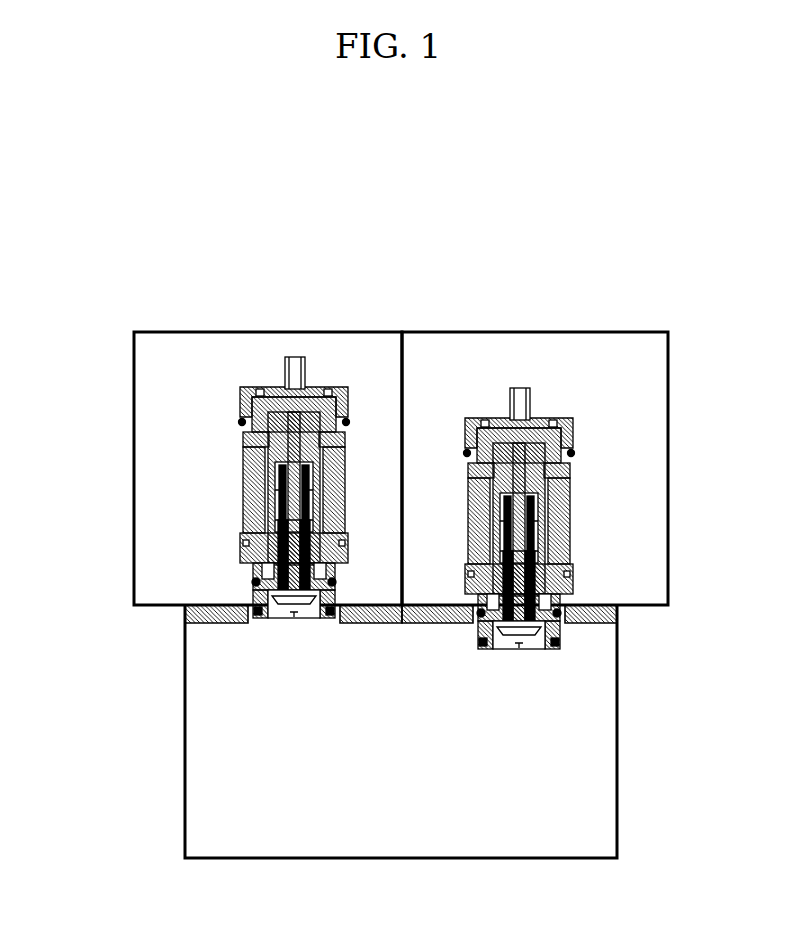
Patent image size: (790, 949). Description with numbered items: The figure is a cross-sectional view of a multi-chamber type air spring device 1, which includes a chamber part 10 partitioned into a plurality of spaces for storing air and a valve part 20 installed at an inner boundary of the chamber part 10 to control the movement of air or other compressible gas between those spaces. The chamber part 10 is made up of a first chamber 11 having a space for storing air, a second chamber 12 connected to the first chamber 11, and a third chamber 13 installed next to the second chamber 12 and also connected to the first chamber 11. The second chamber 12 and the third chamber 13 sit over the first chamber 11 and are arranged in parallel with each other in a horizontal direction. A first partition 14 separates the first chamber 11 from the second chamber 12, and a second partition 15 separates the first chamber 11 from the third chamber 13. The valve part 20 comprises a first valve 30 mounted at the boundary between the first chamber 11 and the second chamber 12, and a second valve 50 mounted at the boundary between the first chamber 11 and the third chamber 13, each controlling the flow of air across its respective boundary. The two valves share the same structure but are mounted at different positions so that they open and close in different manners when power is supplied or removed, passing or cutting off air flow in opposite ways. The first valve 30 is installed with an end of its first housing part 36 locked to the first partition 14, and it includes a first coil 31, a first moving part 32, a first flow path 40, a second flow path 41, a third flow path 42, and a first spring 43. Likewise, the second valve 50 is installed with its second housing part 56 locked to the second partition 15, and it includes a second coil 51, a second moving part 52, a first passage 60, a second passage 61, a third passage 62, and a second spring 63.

The multi-chamber type air spring device 1 is at (609, 246).
The chamber part 10 is at (118, 750).
The first chamber 11 is at (200, 822).
The second chamber 12 is at (150, 500).
The third chamber 13 is at (650, 389).
The first partition 14 is at (210, 624).
The second partition 15 is at (593, 620).
The valve part 20 is at (249, 363).
The first valve 30 is at (276, 384).
The first coil 31 is at (258, 512).
The first moving part 32 is at (283, 608).
The first housing part 36 is at (237, 460).
The first flow path 40 is at (303, 612).
The second flow path 41 is at (255, 598).
The third flow path 42 is at (255, 577).
The first spring 43 is at (305, 472).
The second valve 50 is at (540, 384).
The second coil 51 is at (562, 507).
The second moving part 52 is at (520, 650).
The second housing part 56 is at (578, 556).
The first passage 60 is at (528, 645).
The second passage 61 is at (555, 648).
The third passage 62 is at (575, 586).
The second spring 63 is at (528, 493).